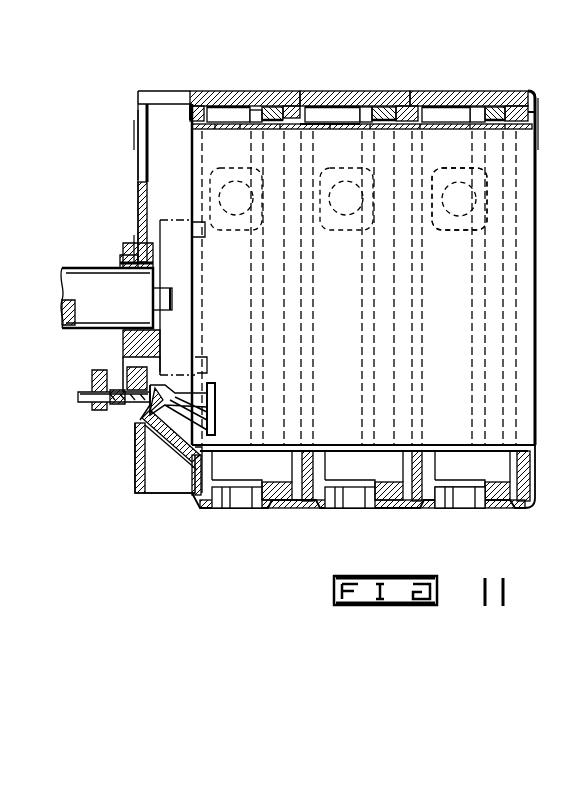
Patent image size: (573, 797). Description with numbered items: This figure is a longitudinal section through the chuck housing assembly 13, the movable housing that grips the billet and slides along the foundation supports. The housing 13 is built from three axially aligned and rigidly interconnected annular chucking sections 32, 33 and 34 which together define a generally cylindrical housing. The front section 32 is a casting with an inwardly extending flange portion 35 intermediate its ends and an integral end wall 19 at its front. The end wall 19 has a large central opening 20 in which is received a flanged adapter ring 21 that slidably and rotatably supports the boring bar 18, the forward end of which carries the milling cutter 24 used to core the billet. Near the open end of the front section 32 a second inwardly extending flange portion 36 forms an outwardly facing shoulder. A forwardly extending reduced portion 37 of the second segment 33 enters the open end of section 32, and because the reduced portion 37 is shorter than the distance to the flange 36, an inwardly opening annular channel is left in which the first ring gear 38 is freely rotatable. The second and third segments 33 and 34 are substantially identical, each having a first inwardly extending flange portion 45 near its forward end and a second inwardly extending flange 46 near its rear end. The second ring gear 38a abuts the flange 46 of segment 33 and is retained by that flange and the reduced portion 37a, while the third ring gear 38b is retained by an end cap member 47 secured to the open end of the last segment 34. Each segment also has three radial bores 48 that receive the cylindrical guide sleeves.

The chuck housing assembly 13 is at (191, 74).
The boring bar 18 is at (62, 272).
The end wall 19 is at (140, 160).
The central opening 20 is at (140, 246).
The flanged adapter ring 21 is at (125, 258).
The milling cutter 24 is at (160, 220).
The front annular chucking section 32 is at (218, 93).
The second chuck segment 33 is at (338, 91).
The third housing segment 34 is at (413, 93).
The inwardly extending flange portion 35 is at (186, 120).
The second inwardly extending flange portion 36 is at (253, 106).
The reduced portion 37 is at (300, 106).
The reduced portion of the third housing segment 37a is at (420, 120).
The first ring gear 38 is at (275, 107).
The second ring gear 38a is at (386, 107).
The third ring gear 38b is at (492, 107).
The first inwardly extending flange portion 45 is at (320, 129).
The second inwardly extending flange 46 is at (362, 106).
The end cap member 47 is at (535, 118).
The radial bores 48 is at (436, 226).